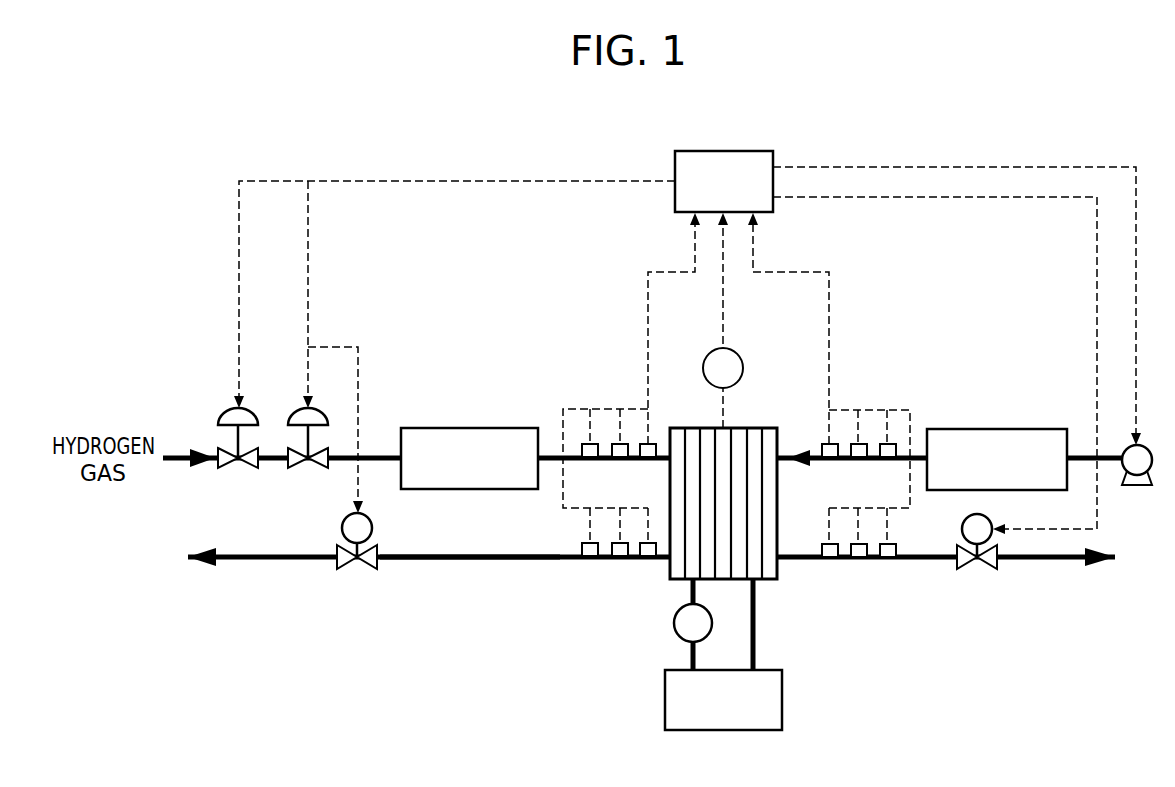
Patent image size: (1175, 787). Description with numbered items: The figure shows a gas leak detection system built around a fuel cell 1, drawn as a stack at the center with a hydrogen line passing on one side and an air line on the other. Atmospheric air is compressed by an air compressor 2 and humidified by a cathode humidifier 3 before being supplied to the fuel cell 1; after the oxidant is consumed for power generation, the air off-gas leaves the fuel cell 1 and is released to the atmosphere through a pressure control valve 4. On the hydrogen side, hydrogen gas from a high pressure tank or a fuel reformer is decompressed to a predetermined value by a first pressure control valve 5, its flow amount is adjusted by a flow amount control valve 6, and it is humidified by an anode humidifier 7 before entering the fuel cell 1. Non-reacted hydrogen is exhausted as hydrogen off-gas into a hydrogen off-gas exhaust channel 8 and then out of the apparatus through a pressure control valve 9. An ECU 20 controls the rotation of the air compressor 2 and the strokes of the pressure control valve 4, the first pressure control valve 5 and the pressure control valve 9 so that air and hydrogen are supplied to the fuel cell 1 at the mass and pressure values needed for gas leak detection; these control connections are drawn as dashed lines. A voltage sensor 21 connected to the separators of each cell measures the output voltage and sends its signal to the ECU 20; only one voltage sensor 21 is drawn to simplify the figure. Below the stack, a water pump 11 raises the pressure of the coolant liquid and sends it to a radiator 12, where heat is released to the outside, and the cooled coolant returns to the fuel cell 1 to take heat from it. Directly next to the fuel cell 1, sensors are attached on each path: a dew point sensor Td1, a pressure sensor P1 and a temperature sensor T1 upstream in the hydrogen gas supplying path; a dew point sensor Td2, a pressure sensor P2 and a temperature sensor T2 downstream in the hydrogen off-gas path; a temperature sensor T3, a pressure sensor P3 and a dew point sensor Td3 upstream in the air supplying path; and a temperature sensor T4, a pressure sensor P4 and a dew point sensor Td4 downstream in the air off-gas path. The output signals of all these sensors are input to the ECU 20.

The fuel cell 1 is at (763, 428).
The air compressor 2 is at (1128, 448).
The cathode humidifier 3 is at (978, 429).
The pressure control valve 4 is at (983, 571).
The first pressure control valve 5 is at (251, 469).
The flow amount control valve 6 is at (321, 469).
The anode humidifier 7 is at (437, 428).
The hydrogen off-gas exhaust channel 8 is at (410, 560).
The pressure control valve 9 is at (359, 571).
The water pump 11 is at (674, 626).
The radiator 12 is at (665, 705).
The ECU 20 is at (728, 150).
The voltage sensor 21 is at (742, 358).
The dew point sensor Td1 is at (586, 444).
The pressure sensor P1 is at (616, 444).
The temperature sensor T1 is at (645, 444).
The dew point sensor Td2 is at (590, 560).
The pressure sensor P2 is at (620, 560).
The temperature sensor T2 is at (648, 560).
The temperature sensor T3 is at (834, 444).
The pressure sensor P3 is at (862, 444).
The dew point sensor Td3 is at (890, 444).
The temperature sensor T4 is at (829, 560).
The pressure sensor P4 is at (858, 560).
The dew point sensor Td4 is at (887, 560).